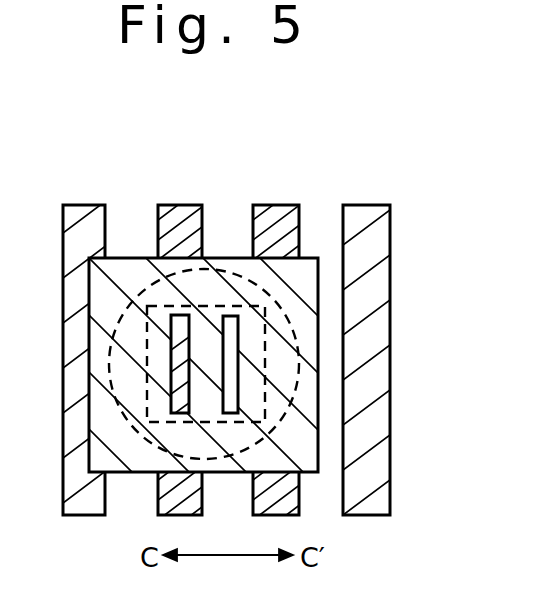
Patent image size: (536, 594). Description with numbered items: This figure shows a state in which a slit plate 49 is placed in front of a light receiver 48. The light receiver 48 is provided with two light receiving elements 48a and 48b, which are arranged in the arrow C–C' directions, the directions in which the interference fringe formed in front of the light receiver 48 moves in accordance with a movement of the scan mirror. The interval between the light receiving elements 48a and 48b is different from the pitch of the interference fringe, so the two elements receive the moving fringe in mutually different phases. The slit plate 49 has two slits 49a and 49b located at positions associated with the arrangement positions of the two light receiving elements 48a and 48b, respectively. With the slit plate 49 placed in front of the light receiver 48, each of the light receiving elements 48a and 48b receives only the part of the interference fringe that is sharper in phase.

The light receiver 48 is at (209, 291).
The light receiving element 48a is at (250, 305).
The light receiving element 48b is at (151, 287).
The slit plate 49 is at (235, 258).
The slit 49a is at (176, 414).
The slit 49b is at (228, 414).